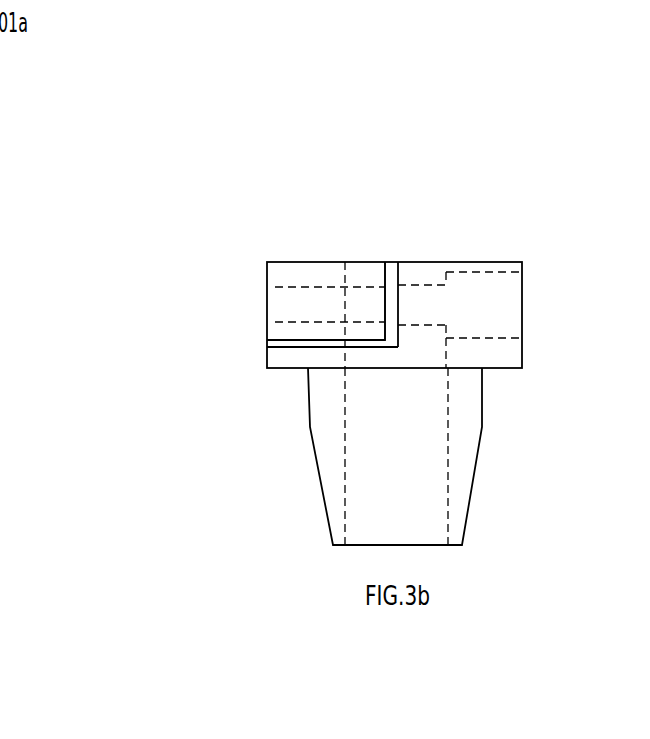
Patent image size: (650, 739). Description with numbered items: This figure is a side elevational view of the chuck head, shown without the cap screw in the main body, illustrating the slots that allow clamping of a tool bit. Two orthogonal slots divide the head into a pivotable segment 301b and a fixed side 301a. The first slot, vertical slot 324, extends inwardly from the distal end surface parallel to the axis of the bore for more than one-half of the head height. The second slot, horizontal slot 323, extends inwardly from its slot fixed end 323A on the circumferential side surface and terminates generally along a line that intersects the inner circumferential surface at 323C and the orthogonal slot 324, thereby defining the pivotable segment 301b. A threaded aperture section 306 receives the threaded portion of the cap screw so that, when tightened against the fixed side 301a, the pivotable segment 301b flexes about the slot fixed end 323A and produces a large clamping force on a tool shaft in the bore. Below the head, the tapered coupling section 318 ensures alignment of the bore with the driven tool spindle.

The fixed segment 301a is at (425, 258).
The pivotable segment 301b is at (320, 258).
The threaded portion 306 is at (278, 292).
The first slot 324 is at (389, 258).
The second slot 323 is at (296, 353).
The slot fixed end 323A is at (333, 346).
The slot termination point 323C is at (378, 356).
The tapered coupling section 318 is at (314, 473).